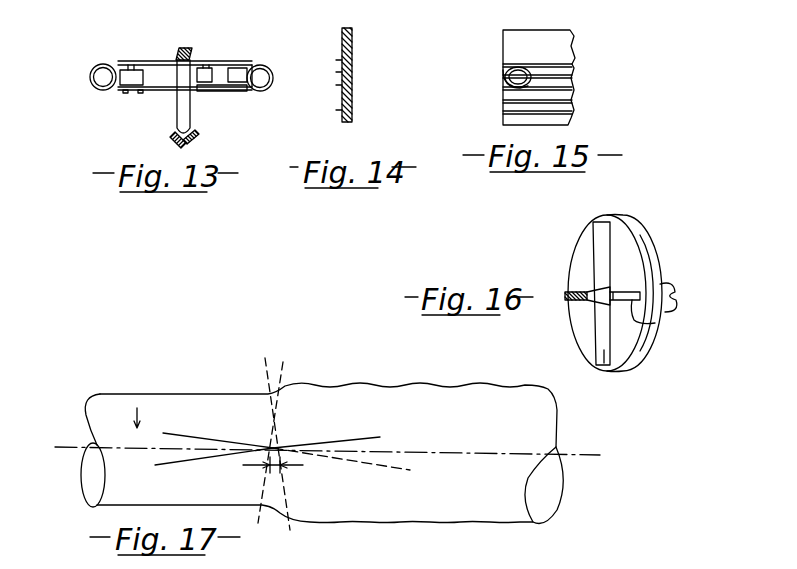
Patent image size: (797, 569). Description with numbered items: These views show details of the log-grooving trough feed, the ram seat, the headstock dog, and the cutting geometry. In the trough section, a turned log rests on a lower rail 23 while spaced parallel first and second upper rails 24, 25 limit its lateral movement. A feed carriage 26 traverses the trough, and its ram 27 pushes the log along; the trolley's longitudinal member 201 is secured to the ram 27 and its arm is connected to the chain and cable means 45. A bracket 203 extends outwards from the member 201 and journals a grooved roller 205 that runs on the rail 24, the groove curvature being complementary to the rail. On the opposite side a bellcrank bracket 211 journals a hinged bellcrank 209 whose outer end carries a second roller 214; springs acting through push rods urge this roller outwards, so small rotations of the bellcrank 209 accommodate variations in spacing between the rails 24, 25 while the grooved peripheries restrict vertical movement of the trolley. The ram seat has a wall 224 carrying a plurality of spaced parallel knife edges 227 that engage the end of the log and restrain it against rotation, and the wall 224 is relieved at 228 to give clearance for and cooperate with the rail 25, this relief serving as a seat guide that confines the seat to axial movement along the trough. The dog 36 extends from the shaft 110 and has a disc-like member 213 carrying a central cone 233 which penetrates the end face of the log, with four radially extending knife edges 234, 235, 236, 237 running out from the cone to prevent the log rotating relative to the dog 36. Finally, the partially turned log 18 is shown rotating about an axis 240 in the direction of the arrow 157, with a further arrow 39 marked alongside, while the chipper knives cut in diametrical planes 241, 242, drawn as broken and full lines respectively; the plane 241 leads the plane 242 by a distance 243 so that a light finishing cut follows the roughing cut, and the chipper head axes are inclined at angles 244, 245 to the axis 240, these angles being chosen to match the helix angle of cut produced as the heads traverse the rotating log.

In FIG. 13, the first upper rail 24 is at (90, 78).
In FIG. 13, the second upper rail 25 is at (263, 66).
In FIG. 15, the second upper rail 25 is at (505, 85).
In FIG. 13, the feed carriage 26 is at (188, 50).
In FIG. 13, the ram 27 is at (177, 56).
In FIG. 13, the bracket 203 is at (145, 62).
In FIG. 13, the roller 205 is at (126, 93).
In FIG. 13, the bellcrank bracket 211 is at (203, 70).
In FIG. 13, the bellcrank 209 is at (197, 93).
In FIG. 13, the roller 214 is at (257, 92).
In FIG. 13, the longitudinal member 201 is at (177, 116).
In FIG. 13, the chain and cable means 45 is at (171, 140).
In FIG. 13, the lower rail 23 is at (190, 144).
In FIG. 14, the wall 224 is at (352, 60).
In FIG. 15, the wall 224 is at (520, 45).
In FIG. 14, the knife edges 227 is at (338, 95).
In FIG. 15, the knife edges 227 is at (574, 98).
In FIG. 15, the relief 228 is at (505, 73).
In FIG. 16, the dog 36 is at (659, 219).
In FIG. 16, the disc 213 is at (585, 253).
In FIG. 16, the knife edge 234 is at (600, 236).
In FIG. 16, the knife edge 237 is at (568, 292).
In FIG. 16, the central cone 233 is at (603, 298).
In FIG. 16, the shaft 110 is at (663, 285).
In FIG. 16, the knife edge 235 is at (655, 323).
In FIG. 16, the knife edge 236 is at (604, 364).
In FIG. 17, the partially turned log 18 is at (393, 375).
In FIG. 17, the arrow 157 is at (75, 465).
In FIG. 17, the axis 240 is at (560, 450).
In FIG. 17, the feed direction 39 is at (262, 328).
In FIG. 17, the diametrical plane 241 is at (267, 373).
In FIG. 17, the diametrical plane 242 is at (286, 370).
In FIG. 17, the angle of inclination 245 is at (163, 438).
In FIG. 17, the angle of inclination 244 is at (156, 463).
In FIG. 17, the distance 243 is at (297, 467).